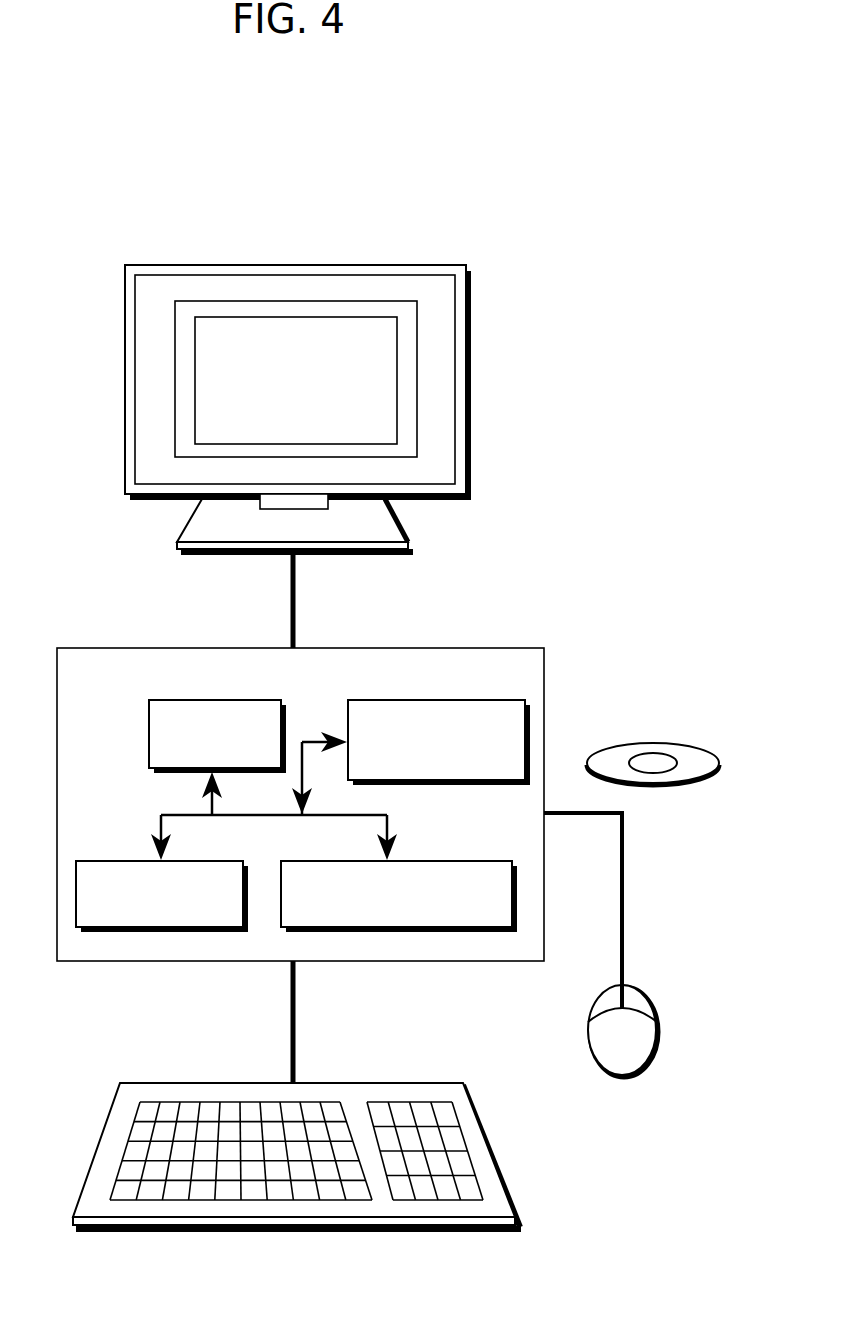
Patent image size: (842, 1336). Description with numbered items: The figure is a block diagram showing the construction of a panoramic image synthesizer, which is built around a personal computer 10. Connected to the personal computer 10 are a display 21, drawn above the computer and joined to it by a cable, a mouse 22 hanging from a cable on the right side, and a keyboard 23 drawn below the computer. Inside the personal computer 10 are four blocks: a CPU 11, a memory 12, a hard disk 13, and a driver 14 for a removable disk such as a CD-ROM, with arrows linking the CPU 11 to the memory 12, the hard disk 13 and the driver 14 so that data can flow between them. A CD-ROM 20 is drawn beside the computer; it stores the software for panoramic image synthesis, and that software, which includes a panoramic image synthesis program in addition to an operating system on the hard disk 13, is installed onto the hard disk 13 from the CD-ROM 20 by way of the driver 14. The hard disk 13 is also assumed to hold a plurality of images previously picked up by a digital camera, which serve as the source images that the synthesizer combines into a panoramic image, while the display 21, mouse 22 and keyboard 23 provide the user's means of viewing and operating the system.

The personal computer 10 is at (478, 648).
The CPU 11 is at (149, 733).
The memory 12 is at (143, 861).
The hard disk 13 is at (433, 861).
The driver 14 is at (428, 700).
The CD-ROM 20 is at (655, 742).
The display 21 is at (295, 265).
The mouse 22 is at (637, 985).
The keyboard 23 is at (493, 1160).